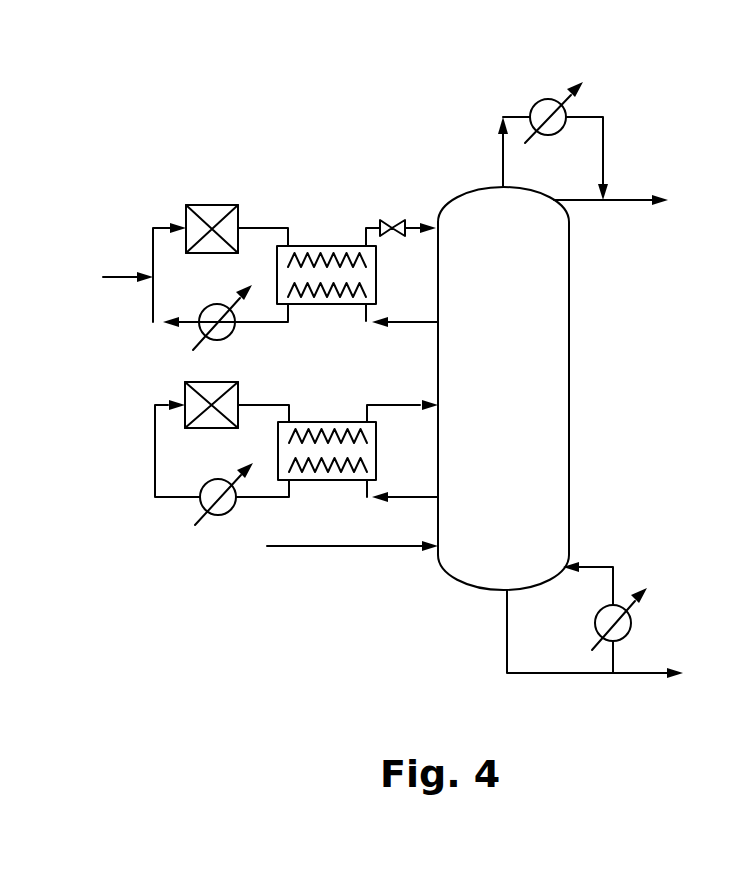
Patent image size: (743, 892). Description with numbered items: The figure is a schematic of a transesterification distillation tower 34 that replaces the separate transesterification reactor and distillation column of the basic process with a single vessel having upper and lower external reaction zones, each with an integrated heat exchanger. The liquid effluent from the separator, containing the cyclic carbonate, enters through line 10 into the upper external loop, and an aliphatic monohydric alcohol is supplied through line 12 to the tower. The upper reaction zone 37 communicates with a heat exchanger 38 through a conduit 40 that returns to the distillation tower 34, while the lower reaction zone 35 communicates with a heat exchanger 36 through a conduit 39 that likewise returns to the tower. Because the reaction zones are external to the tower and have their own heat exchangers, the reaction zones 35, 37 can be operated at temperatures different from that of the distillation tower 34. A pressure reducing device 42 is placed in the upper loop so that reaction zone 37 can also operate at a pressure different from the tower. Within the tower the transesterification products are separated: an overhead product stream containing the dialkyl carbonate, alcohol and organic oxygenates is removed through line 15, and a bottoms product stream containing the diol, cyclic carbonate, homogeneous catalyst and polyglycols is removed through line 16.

The line 10 is at (118, 277).
The line 12 is at (325, 550).
The line 15 is at (630, 200).
The line 16 is at (633, 673).
The distillation tower 34 is at (570, 337).
The reaction zone 35 is at (185, 397).
The heat exchanger 36 is at (327, 422).
The reaction zone 37 is at (208, 205).
The heat exchanger 38 is at (332, 246).
The conduit 39 is at (428, 495).
The conduit 40 is at (415, 322).
The pressure reducing device 42 is at (392, 220).